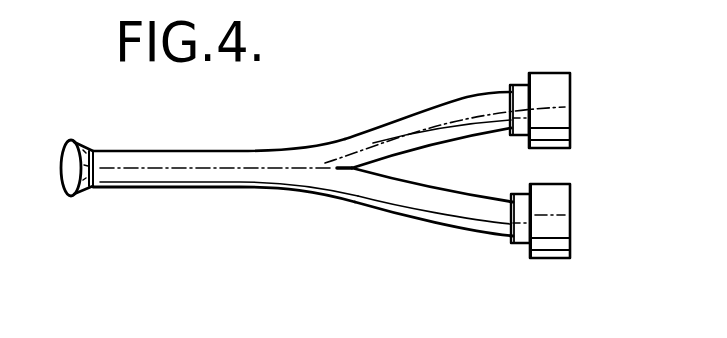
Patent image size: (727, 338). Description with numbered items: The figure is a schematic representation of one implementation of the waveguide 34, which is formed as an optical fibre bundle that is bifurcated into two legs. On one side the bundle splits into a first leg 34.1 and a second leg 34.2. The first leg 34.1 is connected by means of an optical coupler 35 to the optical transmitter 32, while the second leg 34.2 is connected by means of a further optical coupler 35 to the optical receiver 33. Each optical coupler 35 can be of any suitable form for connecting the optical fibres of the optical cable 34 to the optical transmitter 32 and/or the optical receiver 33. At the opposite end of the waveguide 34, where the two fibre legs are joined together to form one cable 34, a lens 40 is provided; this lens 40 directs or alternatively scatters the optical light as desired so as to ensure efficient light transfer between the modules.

The optical transmitter 32 is at (553, 86).
The optical receiver 33 is at (556, 200).
The waveguide 34 is at (194, 159).
The first leg 34.1 is at (417, 122).
The second leg 34.2 is at (417, 205).
The optical coupler 35 is at (522, 98).
The lens 40 is at (74, 140).